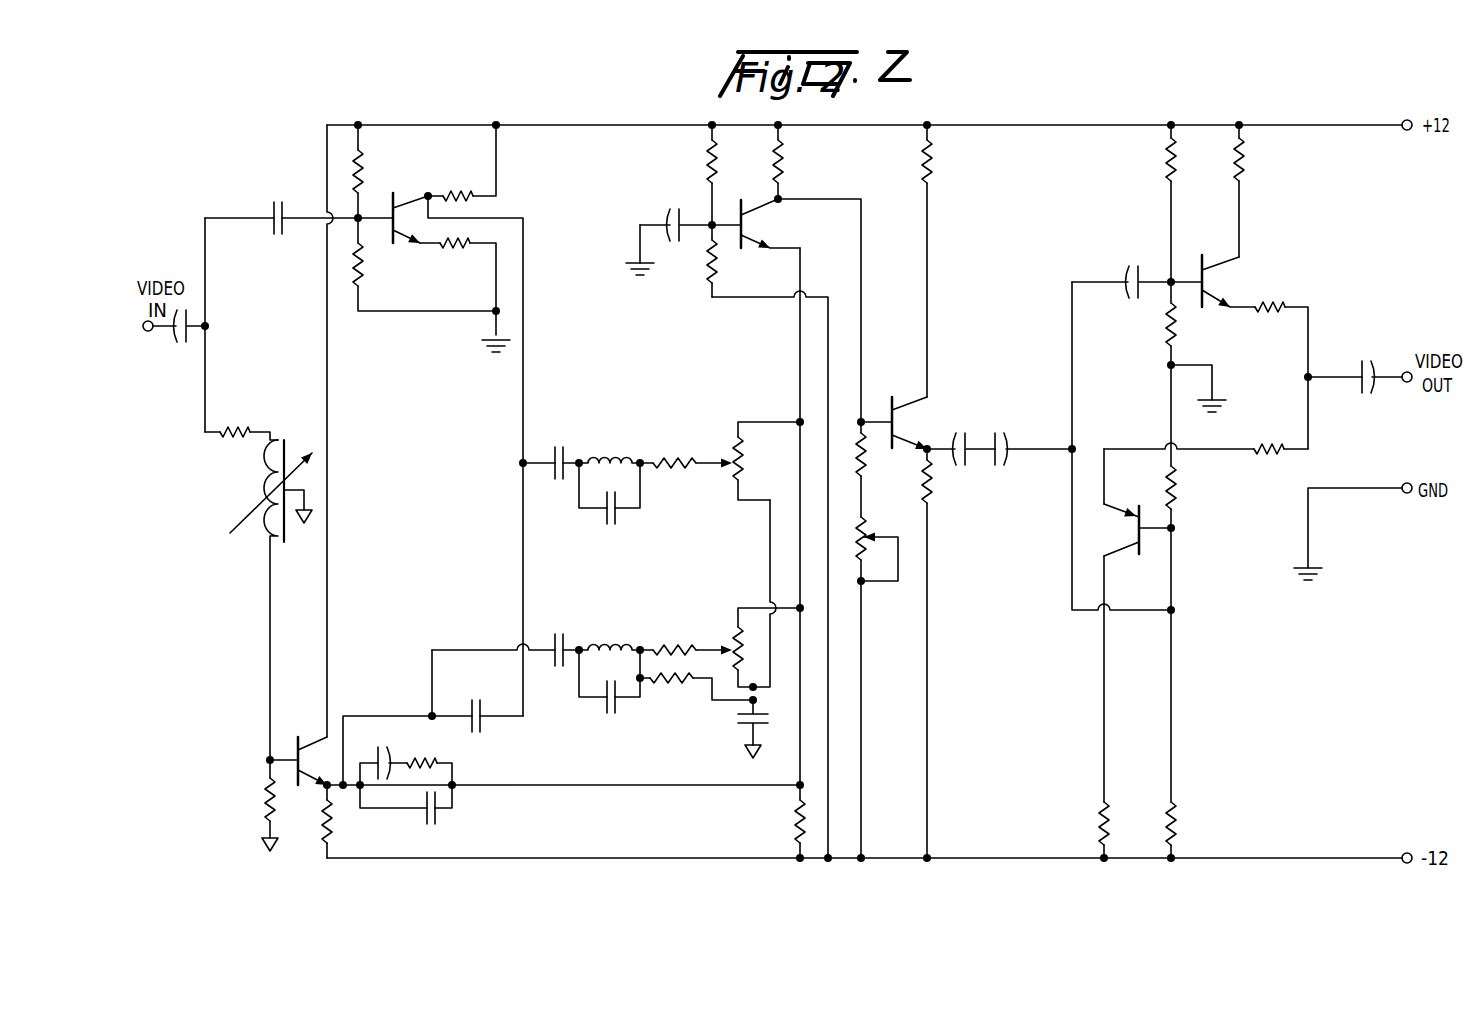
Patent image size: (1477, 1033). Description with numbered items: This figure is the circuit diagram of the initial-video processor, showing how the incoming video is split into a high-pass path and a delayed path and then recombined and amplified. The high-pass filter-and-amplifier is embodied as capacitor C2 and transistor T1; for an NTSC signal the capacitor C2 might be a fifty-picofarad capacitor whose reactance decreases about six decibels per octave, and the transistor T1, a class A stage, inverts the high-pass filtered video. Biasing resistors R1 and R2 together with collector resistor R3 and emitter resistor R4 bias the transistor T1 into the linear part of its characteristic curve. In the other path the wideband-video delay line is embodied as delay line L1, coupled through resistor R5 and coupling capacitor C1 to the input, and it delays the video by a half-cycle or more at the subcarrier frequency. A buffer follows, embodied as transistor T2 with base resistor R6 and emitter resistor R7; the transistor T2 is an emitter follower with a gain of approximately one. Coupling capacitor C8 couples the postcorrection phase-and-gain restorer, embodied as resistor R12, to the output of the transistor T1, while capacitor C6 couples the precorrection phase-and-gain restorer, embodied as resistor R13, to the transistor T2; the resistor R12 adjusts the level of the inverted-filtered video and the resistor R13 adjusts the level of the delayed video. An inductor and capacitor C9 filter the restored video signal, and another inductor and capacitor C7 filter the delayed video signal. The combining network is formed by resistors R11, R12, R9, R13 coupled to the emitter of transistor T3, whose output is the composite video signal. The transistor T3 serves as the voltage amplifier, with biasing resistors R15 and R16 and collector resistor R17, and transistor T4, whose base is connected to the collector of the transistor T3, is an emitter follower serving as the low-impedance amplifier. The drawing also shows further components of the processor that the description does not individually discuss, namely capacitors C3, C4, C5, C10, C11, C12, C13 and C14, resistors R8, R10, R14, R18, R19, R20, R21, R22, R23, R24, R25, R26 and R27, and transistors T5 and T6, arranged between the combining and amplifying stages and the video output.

The coupling capacitor C1 is at (179, 341).
The capacitor C2 is at (299, 204).
The capacitor C3 is at (477, 700).
The capacitor C4 is at (383, 751).
The capacitor C5 is at (406, 819).
The capacitor C6 is at (505, 636).
The capacitor C7 is at (609, 696).
The coupling capacitor C8 is at (551, 447).
The capacitor C9 is at (609, 511).
The capacitor C10 is at (676, 210).
The coupling capacitor C11 is at (961, 433).
The coupling capacitor C12 is at (1030, 433).
The capacitor C13 is at (1137, 267).
The output coupling capacitor C14 is at (1355, 360).
The biasing resistor R1 is at (370, 171).
The biasing resistor R2 is at (424, 264).
The collector resistor R3 is at (462, 163).
The emitter resistor R4 is at (458, 274).
The resistor R5 is at (241, 420).
The base resistor R6 is at (279, 805).
The emitter resistor R7 is at (339, 821).
The resistor R8 is at (429, 757).
The resistor R9 is at (686, 636).
The resistor R10 is at (696, 693).
The resistor R11 is at (686, 449).
The resistor R12 is at (766, 461).
The resistor R13 is at (751, 647).
The variable resistor R14 is at (877, 507).
The biasing resistor R15 is at (727, 175).
The biasing resistor R16 is at (727, 261).
The collector resistor R17 is at (794, 162).
The resistor R18 is at (943, 261).
The resistor R19 is at (943, 653).
The resistor R20 is at (1188, 203).
The resistor R21 is at (1256, 191).
The resistor R22 is at (1152, 374).
The resistor R23 is at (1281, 362).
The resistor R24 is at (1206, 462).
The resistor R25 is at (1188, 634).
The resistor R26 is at (1188, 830).
The resistor R27 is at (1120, 830).
The transistor T1 is at (410, 220).
The transistor T2 is at (299, 763).
The transistor T3 is at (756, 225).
The transistor T4 is at (895, 425).
The transistor T5 is at (1228, 283).
The transistor T6 is at (1137, 530).
The delay line L1 is at (272, 600).